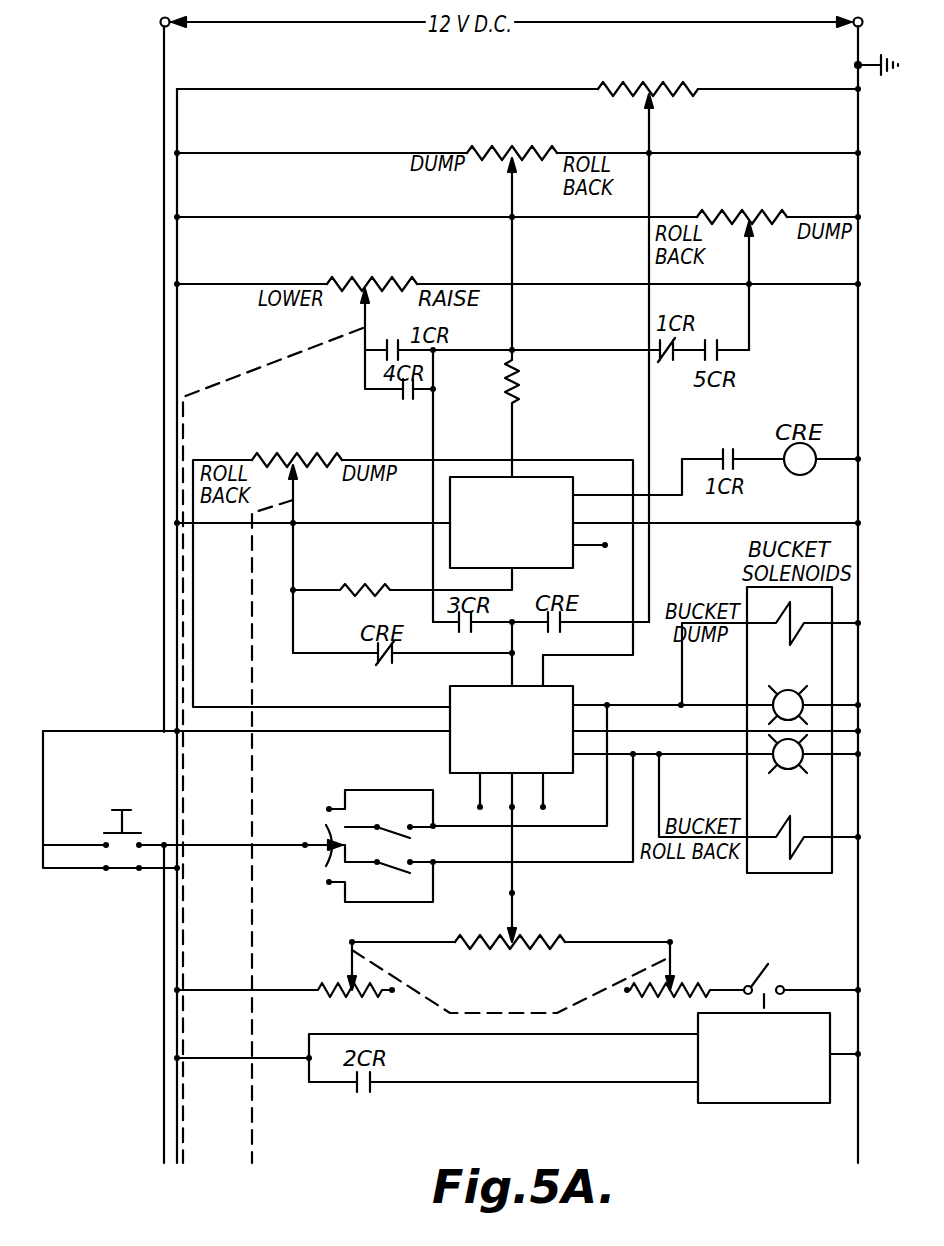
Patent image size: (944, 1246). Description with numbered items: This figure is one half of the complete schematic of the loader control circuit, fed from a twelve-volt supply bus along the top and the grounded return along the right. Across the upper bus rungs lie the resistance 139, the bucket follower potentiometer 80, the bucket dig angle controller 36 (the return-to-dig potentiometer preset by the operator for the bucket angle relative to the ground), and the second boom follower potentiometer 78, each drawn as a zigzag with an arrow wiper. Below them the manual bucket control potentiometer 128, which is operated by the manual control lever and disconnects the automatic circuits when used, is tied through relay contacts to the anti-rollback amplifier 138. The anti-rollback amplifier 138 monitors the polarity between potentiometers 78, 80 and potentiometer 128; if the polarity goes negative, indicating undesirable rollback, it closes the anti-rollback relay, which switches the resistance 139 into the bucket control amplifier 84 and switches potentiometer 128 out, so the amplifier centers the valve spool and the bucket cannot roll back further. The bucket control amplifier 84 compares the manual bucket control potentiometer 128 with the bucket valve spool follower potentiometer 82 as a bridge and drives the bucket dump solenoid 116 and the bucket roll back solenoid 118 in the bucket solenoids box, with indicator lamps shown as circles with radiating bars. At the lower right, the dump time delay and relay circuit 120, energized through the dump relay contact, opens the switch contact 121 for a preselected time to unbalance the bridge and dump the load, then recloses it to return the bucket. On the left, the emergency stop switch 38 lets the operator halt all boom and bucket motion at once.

The resistance 139 is at (666, 90).
The bucket follower potentiometer 80 is at (512, 219).
The bucket dig angle controller 36 is at (753, 220).
The second boom follower potentiometer 78 is at (364, 289).
The manual bucket control potentiometer 128 is at (316, 462).
The anti-rollback amplifier 138 is at (575, 558).
The bucket control amplifier 84 is at (576, 700).
The bucket dump solenoid 116 is at (772, 640).
The bucket roll back solenoid 118 is at (818, 810).
The emergency stop switch 38 is at (75, 871).
The bucket valve spool follower potentiometer 82 is at (516, 933).
The switch contact 121 is at (784, 955).
The dump time delay and relay circuit 120 is at (758, 1104).